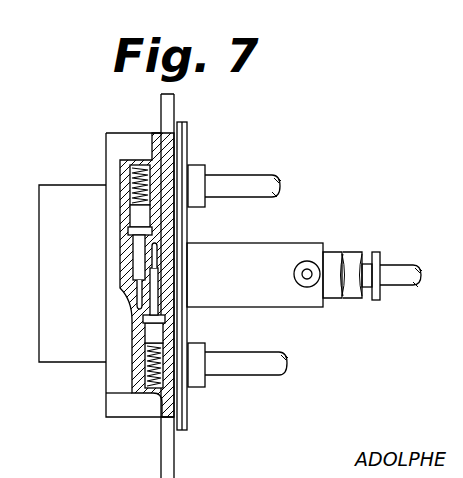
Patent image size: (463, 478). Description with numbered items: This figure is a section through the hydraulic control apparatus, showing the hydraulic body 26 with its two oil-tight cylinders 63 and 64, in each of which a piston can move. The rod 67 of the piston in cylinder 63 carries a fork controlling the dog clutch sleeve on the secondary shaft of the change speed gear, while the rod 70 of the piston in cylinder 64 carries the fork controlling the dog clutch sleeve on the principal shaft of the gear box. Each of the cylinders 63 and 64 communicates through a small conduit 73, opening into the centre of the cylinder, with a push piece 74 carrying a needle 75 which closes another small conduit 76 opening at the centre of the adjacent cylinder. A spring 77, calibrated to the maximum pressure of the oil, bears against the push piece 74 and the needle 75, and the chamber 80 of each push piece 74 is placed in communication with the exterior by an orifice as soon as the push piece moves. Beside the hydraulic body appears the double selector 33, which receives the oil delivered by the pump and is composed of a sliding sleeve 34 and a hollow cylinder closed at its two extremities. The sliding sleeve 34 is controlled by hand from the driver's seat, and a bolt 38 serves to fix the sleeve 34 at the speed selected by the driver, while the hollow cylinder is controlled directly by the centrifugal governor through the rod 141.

The oil-tight cylinder 64 is at (112, 138).
The oil-tight cylinder 63 is at (134, 407).
The small conduit 73 is at (184, 228).
The hydraulic body 26 is at (104, 291).
The spring 77 is at (130, 173).
The push piece 74 is at (131, 213).
The chamber 80 is at (130, 232).
The needle 75 is at (140, 283).
The small conduit 76 is at (132, 305).
The rod 70 is at (234, 180).
The rod 67 is at (258, 362).
The double selector 33 is at (289, 252).
The bolt 38 is at (309, 272).
The sliding sleeve 34 is at (375, 298).
The rod 141 is at (404, 278).